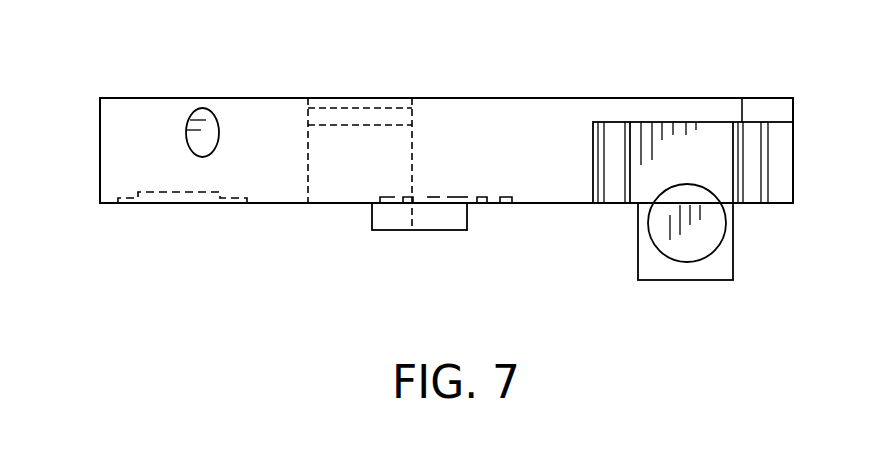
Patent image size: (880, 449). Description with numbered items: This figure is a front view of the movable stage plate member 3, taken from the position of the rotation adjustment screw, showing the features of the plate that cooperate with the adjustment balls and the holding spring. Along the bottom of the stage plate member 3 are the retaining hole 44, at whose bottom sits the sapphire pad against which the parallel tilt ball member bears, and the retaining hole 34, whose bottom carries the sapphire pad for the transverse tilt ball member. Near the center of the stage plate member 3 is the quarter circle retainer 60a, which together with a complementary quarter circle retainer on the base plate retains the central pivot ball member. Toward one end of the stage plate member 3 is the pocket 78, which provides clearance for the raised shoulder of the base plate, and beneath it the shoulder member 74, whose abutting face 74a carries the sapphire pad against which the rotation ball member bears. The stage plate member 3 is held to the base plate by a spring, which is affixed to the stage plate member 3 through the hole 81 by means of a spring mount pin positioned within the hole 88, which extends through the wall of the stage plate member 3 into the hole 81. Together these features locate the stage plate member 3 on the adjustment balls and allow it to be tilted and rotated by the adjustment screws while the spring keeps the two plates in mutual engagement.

The stage plate member 3 is at (402, 132).
The hole 88 is at (159, 101).
The hole 81 is at (308, 131).
The retaining hole 44 is at (212, 227).
The quarter circle retainer 60a is at (427, 248).
The retaining hole 34 is at (485, 229).
The pocket 78 is at (673, 113).
The shoulder member 74 is at (736, 243).
The abutting face 74a is at (743, 156).